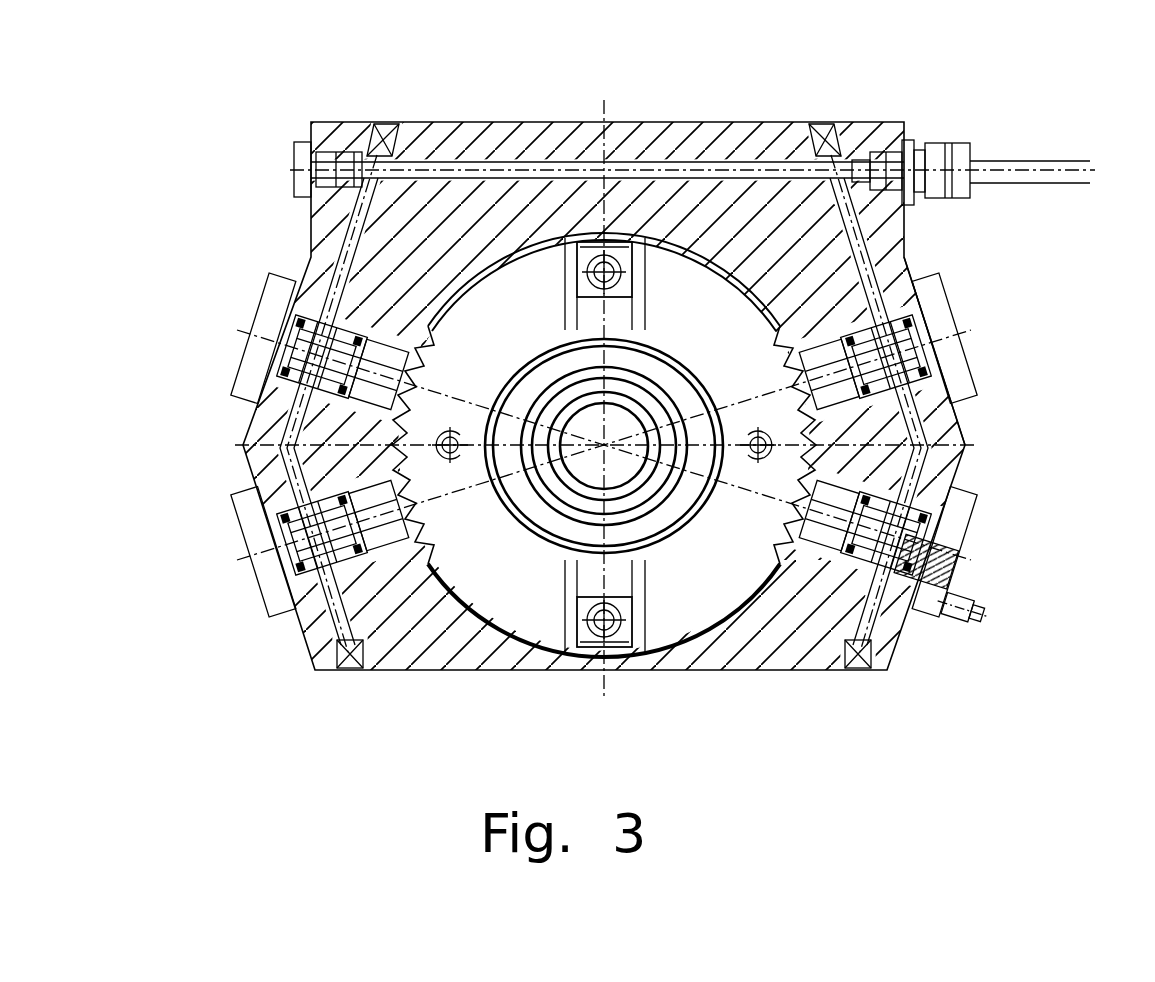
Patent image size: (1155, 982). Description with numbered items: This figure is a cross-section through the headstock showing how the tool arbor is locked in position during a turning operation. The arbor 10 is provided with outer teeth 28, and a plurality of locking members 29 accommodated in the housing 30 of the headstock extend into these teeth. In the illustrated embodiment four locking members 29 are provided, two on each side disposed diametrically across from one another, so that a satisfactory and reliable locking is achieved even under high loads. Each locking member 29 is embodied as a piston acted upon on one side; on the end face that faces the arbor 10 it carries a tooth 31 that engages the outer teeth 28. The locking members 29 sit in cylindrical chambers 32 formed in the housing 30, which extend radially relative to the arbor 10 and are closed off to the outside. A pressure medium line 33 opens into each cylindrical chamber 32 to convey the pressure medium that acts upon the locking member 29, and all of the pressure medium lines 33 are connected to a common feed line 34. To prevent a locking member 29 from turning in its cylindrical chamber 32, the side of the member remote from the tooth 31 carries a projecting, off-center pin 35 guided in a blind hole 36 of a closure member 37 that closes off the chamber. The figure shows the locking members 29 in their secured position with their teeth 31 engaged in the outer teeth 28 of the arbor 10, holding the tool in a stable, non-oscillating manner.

The arbor 10 is at (710, 585).
The outer teeth 28 is at (865, 443).
The locking member 29 is at (333, 327).
The housing 30 is at (715, 143).
The tooth 31 is at (390, 368).
The cylindrical chamber 32 is at (967, 386).
The pressure medium line 33 is at (865, 250).
The common feed line 34 is at (995, 168).
The off-center pin 35 is at (955, 612).
The blind hole 36 is at (960, 565).
The closure member 37 is at (937, 322).